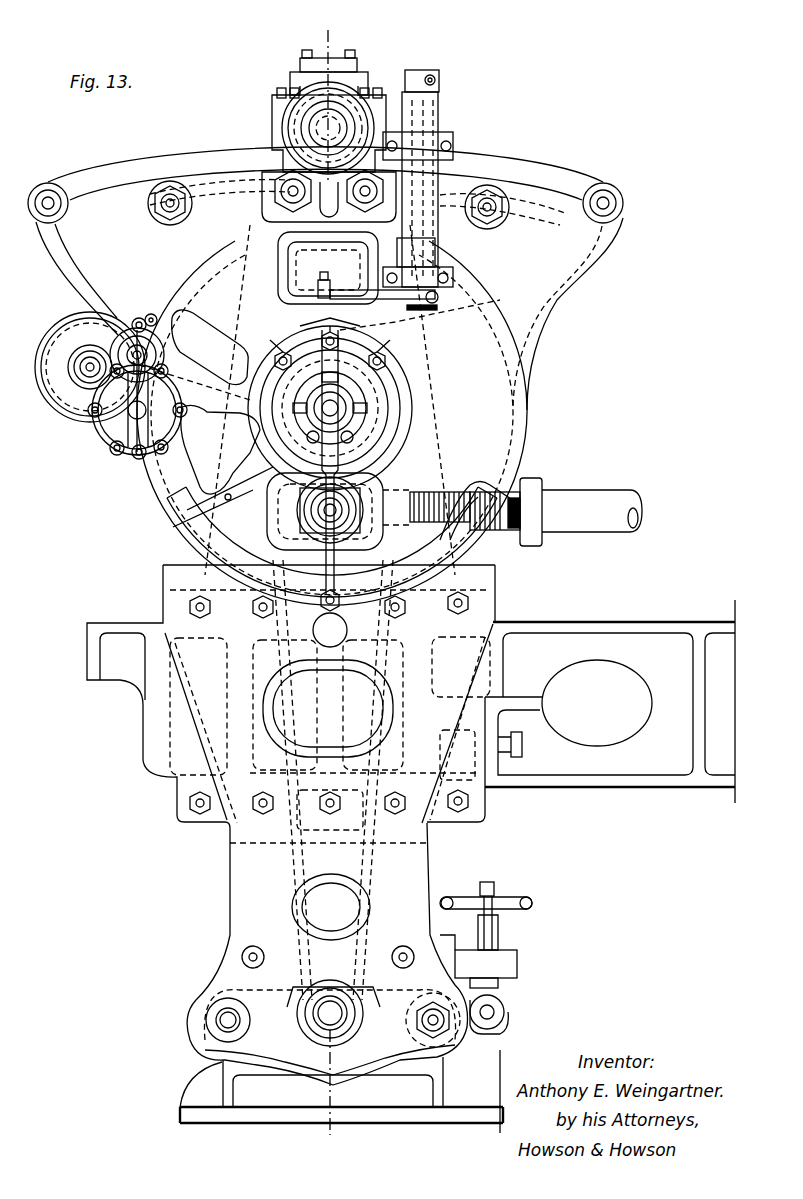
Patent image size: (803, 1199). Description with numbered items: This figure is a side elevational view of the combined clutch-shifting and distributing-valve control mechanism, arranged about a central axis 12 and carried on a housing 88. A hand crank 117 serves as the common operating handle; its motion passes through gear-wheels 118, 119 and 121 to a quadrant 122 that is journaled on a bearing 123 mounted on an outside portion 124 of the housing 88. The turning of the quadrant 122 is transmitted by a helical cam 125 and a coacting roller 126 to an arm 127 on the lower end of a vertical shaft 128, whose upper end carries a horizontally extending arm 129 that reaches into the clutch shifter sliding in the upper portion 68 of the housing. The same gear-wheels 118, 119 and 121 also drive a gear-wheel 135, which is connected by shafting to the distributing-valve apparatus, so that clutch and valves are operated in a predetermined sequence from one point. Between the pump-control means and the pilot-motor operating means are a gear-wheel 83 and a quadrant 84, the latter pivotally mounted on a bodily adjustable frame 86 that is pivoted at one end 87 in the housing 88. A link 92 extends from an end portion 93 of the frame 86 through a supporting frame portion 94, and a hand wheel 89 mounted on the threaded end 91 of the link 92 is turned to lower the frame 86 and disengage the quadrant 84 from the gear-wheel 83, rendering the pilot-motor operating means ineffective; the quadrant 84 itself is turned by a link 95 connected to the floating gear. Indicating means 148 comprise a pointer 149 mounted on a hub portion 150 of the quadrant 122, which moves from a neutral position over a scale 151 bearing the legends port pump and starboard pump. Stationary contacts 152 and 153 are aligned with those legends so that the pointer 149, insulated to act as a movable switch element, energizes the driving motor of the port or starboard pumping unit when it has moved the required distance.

The shaft axis / center line 12 is at (328, 583).
The upper portion of the housing 68 is at (333, 63).
The horizontally extending arm 129 is at (388, 88).
The gear-wheel 83 is at (285, 128).
The vertical shaft 128 is at (418, 176).
The gear-wheel quadrant 84 is at (468, 226).
The arm 127 is at (343, 290).
The roller 126 is at (290, 308).
The helical cam 125 is at (400, 336).
The gear-wheel 118 is at (158, 353).
The gear-wheel 119 is at (150, 370).
The gear-wheel 121 is at (150, 398).
The hub portion of the quadrant 150 is at (380, 390).
The bearing 123 is at (380, 415).
The outside portion of the housing 124 is at (527, 402).
The gear-wheel 135 is at (75, 400).
The hand crank 117 is at (130, 432).
The stationary contact 152 is at (229, 494).
The quadrant 122 is at (165, 505).
The stationary contact 153 is at (445, 490).
The indicating means 148 is at (388, 480).
The pointer 149 is at (340, 510).
The link 95 is at (556, 501).
The scale 151 is at (262, 585).
The housing 88 is at (228, 915).
The bodily adjustable frame 86 is at (330, 1000).
The pivoted end of the frame 87 is at (222, 1022).
The threaded end of the link 91 is at (490, 884).
The hand wheel 89 is at (516, 905).
The supporting frame portion 94 is at (518, 960).
The link 92 is at (500, 990).
The end portion of the frame 93 is at (506, 1012).